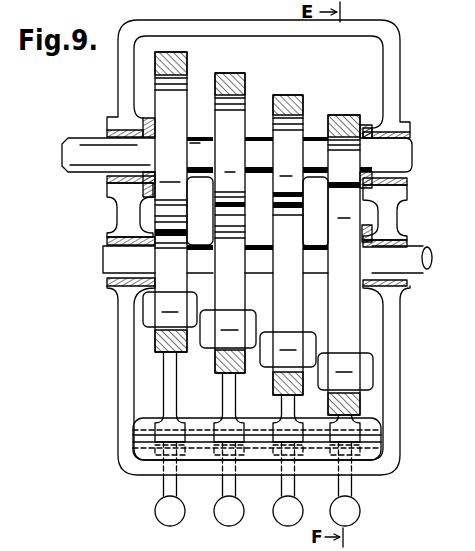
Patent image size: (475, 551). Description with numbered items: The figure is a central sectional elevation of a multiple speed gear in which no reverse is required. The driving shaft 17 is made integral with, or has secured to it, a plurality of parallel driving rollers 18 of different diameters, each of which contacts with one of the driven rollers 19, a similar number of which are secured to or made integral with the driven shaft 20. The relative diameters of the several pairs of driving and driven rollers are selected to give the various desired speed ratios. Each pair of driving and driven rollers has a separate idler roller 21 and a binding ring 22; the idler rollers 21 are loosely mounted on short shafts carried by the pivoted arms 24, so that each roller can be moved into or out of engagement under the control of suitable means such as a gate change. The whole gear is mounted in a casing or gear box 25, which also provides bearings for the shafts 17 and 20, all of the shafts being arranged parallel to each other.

The driving shaft 17 is at (110, 262).
The driving rollers 18 is at (215, 254).
The driven rollers 19 is at (237, 125).
The driven shaft 20 is at (387, 162).
The idler roller 21 is at (342, 370).
The binding ring 22 is at (280, 96).
The pivoted arms 24 is at (222, 485).
The casing or gear box 25 is at (222, 82).